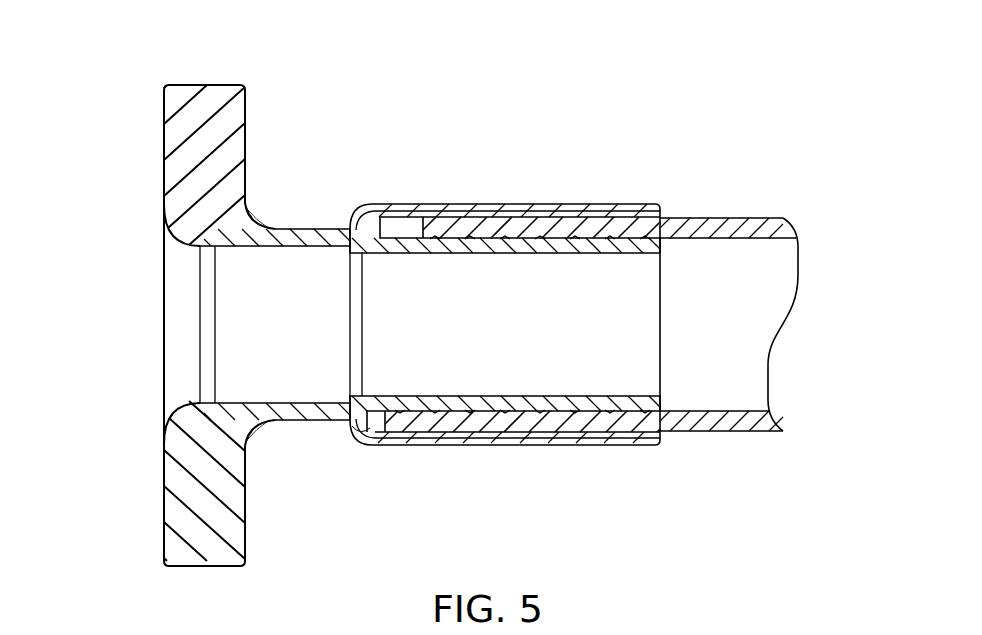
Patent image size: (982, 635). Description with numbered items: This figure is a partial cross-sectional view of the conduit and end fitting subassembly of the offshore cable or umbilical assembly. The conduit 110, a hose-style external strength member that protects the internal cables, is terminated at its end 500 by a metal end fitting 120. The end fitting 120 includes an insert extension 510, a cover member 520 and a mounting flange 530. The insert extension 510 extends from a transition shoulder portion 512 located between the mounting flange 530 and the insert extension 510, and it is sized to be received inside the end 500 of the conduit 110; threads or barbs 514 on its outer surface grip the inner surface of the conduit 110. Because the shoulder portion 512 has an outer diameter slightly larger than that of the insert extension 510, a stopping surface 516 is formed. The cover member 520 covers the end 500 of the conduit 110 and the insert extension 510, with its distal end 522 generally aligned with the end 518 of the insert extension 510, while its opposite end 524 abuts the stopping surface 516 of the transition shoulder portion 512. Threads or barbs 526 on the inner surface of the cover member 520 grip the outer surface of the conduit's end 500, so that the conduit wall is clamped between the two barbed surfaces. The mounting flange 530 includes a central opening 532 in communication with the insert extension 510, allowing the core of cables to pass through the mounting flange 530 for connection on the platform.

The end fitting 120 is at (95, 89).
The conduit 110 is at (752, 174).
The end of the conduit 500 is at (410, 218).
The insert extension 510 is at (493, 246).
The transition shoulder portion 512 is at (290, 229).
The threads or barbs 514 is at (517, 232).
The stopping surface 516 is at (354, 431).
The end of the insert extension 518 is at (662, 400).
The cover member 520 is at (606, 446).
The distal end 522 is at (662, 436).
The opposite end 524 is at (366, 203).
The threads or barbs 526 is at (596, 240).
The mounting flange 530 is at (178, 526).
The central opening 532 is at (201, 385).